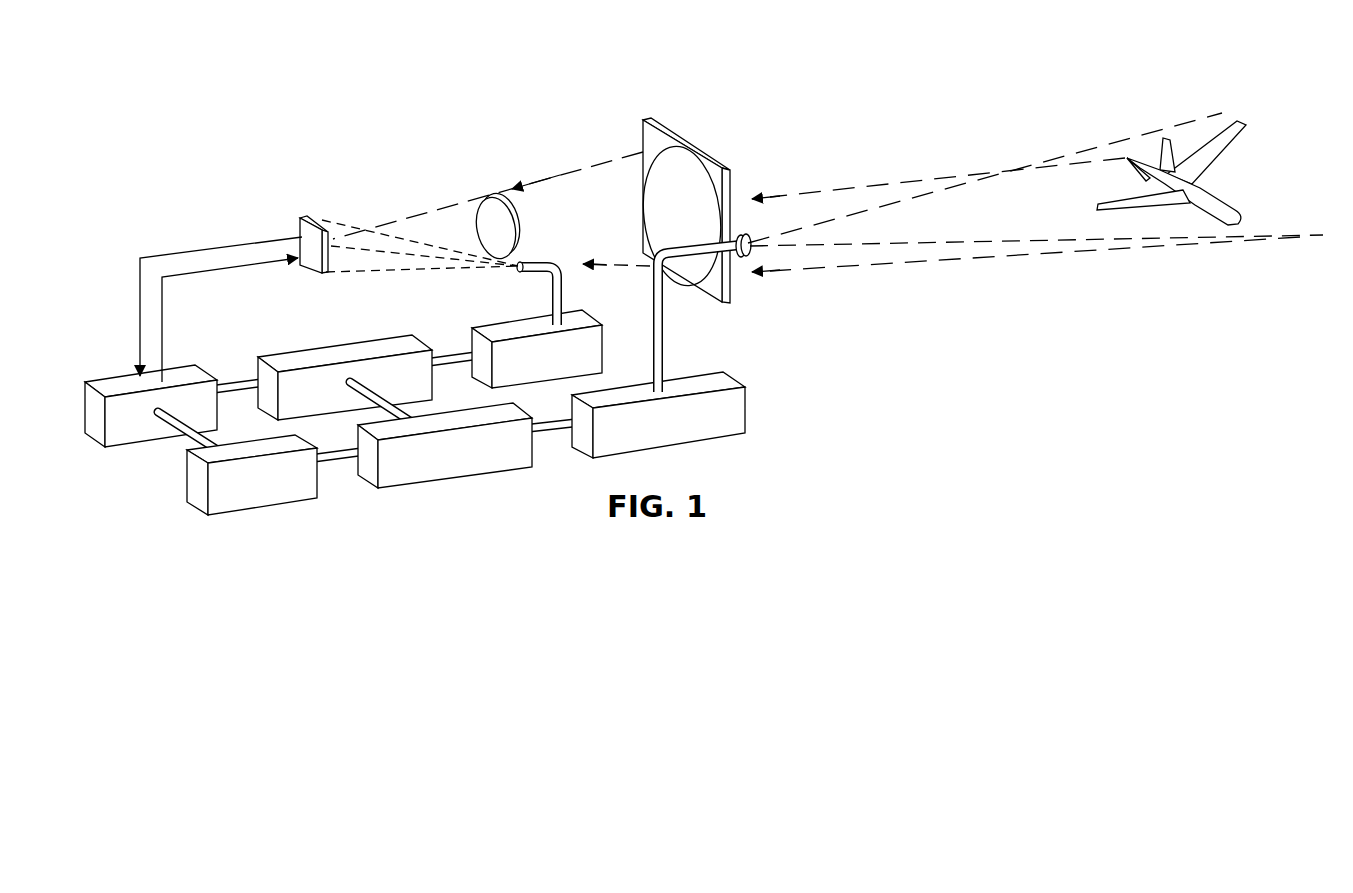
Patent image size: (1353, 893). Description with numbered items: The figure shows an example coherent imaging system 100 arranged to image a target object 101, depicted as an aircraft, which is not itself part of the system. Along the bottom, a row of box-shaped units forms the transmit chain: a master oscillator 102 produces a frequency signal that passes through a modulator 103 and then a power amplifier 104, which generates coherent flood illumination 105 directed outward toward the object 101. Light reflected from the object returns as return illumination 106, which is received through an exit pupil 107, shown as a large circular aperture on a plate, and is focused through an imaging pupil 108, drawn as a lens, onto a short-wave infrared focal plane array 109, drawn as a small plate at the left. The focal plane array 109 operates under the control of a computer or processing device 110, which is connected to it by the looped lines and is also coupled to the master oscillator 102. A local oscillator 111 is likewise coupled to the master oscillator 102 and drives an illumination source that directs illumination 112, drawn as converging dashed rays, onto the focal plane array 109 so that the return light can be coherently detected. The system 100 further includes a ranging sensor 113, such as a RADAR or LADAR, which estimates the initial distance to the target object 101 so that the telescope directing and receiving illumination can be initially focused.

The coherent imaging system 100 is at (462, 120).
The target object 101 is at (1250, 176).
The master oscillator 102 is at (293, 358).
The modulator 103 is at (463, 467).
The power amplifier 104 is at (677, 435).
The coherent flood illumination 105 is at (1100, 145).
The return illumination 106 is at (855, 188).
The exit pupil 107 is at (690, 147).
The imaging pupil 108 is at (495, 197).
The short-wave infrared focal plane array 109 is at (303, 217).
The processing device 110 is at (120, 378).
The local oscillator 111 is at (505, 331).
The illumination 112 is at (347, 228).
The ranging sensor 113 is at (270, 493).